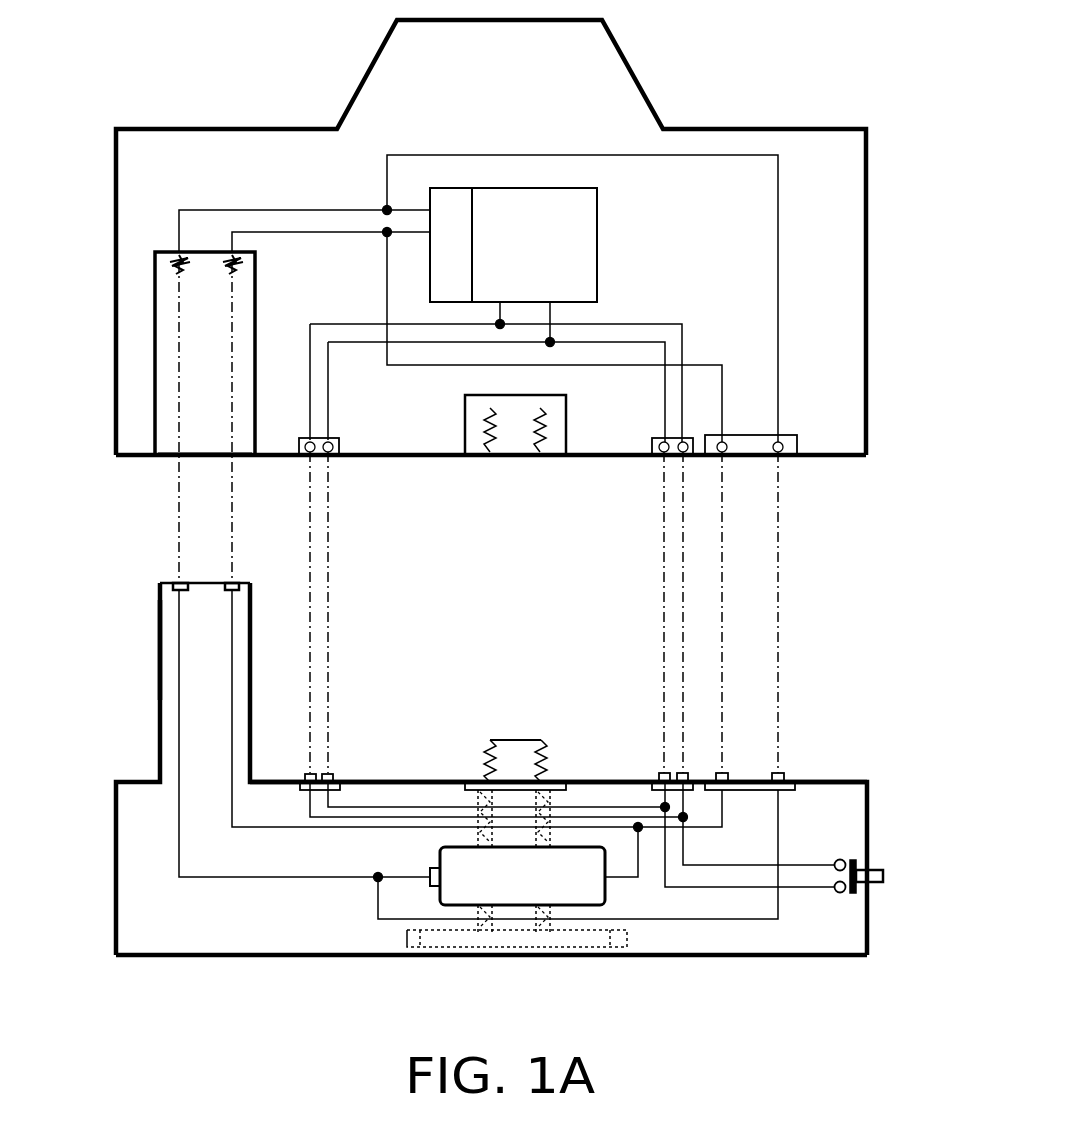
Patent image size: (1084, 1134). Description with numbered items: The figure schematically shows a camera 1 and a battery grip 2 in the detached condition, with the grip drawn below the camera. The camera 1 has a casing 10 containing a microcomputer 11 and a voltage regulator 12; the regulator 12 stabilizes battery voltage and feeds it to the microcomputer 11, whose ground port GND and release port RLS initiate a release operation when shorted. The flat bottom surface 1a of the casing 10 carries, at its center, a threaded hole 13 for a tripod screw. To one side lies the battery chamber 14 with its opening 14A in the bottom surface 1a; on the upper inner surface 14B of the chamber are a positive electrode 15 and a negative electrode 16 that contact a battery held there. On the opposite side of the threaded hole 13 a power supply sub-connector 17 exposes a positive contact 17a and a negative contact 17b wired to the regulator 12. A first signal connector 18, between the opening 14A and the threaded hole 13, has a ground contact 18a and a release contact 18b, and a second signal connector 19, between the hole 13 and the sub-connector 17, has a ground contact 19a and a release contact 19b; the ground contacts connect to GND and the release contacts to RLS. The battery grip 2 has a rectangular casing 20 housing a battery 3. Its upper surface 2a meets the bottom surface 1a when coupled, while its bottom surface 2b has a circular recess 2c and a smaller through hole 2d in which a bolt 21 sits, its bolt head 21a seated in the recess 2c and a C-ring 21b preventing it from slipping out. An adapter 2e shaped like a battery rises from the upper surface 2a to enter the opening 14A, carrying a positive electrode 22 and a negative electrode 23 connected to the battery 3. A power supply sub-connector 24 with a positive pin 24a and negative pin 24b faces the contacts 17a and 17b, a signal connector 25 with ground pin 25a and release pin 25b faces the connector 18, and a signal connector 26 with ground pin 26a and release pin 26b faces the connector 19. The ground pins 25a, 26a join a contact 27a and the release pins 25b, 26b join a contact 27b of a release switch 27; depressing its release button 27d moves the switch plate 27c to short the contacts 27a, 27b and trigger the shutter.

The camera 1 is at (790, 107).
The bottom surface 1a is at (415, 458).
The casing 10 is at (636, 82).
The microcomputer 11 is at (597, 225).
The voltage regulator 12 is at (442, 282).
The threaded hole 13 is at (497, 440).
The battery chamber 14 is at (150, 348).
The opening 14A is at (173, 456).
The upper inner surface 14B is at (200, 262).
The positive electrode 15 is at (180, 270).
The negative electrode 16 is at (233, 270).
The power supply sub-connector 17 is at (786, 435).
The positive contact 17a is at (780, 457).
The negative contact 17b is at (724, 457).
The first signal connector 18 is at (331, 437).
The ground contact 18a is at (308, 457).
The release contact 18b is at (330, 457).
The second signal connector 19 is at (657, 437).
The ground contact 19a is at (681, 457).
The release contact 19b is at (651, 440).
The battery grip 2 is at (836, 689).
The upper surface 2a is at (390, 780).
The bottom surface 2b is at (240, 958).
The circular recess 2c is at (407, 950).
The through hole 2d is at (478, 834).
The adapter 2e is at (160, 700).
The casing 20 is at (868, 787).
The bolt 21 is at (517, 748).
The bolt head 21a is at (520, 948).
The C-ring 21b is at (465, 782).
The positive electrode 22 is at (176, 582).
The negative electrode 23 is at (238, 582).
The power supply sub-connector 24 is at (766, 754).
The positive pin 24a is at (814, 756).
The negative pin 24b is at (722, 790).
The signal connector 25 is at (303, 790).
The ground pin 25a is at (306, 775).
The release pin 25b is at (333, 775).
The signal connector 26 is at (690, 790).
The ground pin 26a is at (680, 773).
The release pin 26b is at (659, 778).
The release switch 27 is at (890, 881).
The contact 27a is at (843, 858).
The contact 27b is at (843, 893).
The switch plate 27c is at (866, 893).
The release button 27d is at (882, 869).
The battery 3 is at (605, 887).